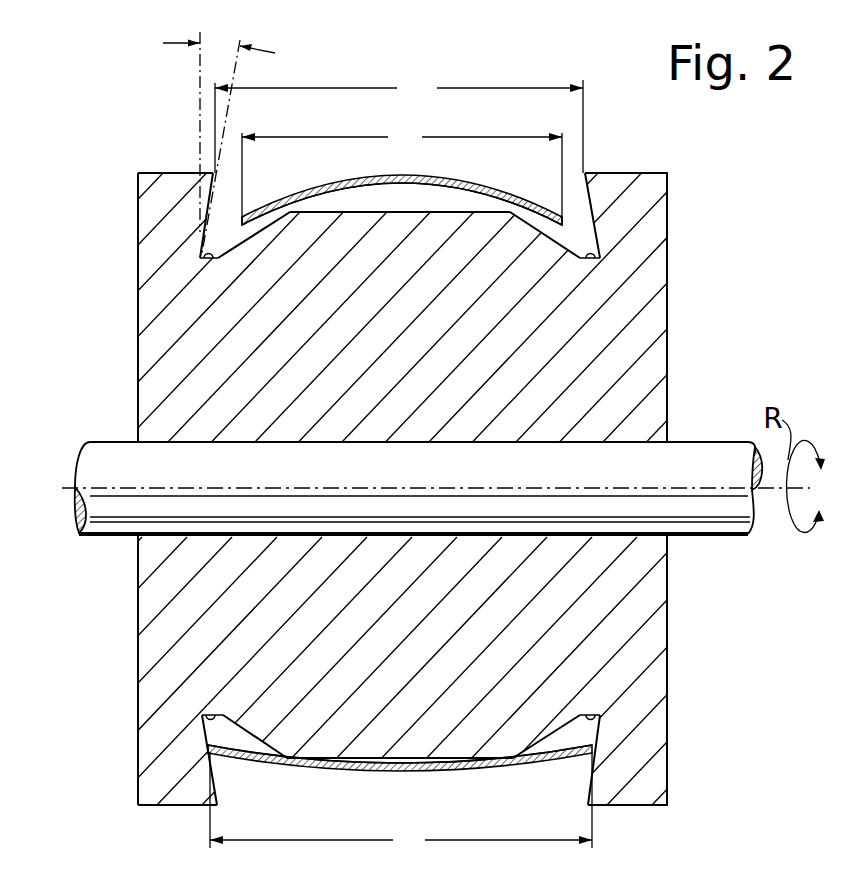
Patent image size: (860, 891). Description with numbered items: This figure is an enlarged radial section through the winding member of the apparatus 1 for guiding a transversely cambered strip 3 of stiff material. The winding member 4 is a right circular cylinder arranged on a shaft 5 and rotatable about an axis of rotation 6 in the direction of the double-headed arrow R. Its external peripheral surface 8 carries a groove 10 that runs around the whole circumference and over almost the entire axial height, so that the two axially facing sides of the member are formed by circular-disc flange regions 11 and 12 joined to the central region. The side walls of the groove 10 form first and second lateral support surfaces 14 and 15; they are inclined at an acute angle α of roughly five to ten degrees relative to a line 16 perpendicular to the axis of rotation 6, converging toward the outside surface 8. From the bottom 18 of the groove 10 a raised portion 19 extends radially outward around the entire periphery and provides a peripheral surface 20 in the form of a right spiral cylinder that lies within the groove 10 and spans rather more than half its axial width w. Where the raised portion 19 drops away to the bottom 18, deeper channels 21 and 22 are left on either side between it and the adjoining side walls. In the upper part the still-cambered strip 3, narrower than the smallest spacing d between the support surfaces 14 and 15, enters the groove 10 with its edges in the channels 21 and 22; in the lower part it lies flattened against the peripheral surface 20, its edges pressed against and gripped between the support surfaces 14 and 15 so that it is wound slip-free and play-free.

The apparatus 1 is at (700, 306).
The strip 3 is at (508, 198).
The winding member 4 is at (162, 373).
The shaft 5 is at (117, 523).
The axis of rotation 6 is at (66, 493).
The external peripheral surface 8 is at (607, 172).
The groove 10 is at (265, 195).
The flange region 11 is at (652, 185).
The flange region 12 is at (160, 182).
The first lateral support surface 14 is at (584, 202).
The second lateral support surface 15 is at (213, 203).
The line 16 is at (198, 110).
The bottom of the groove 18 is at (212, 261).
The raised portion 19 is at (448, 228).
The peripheral surface 20 is at (335, 212).
The channel 21 is at (582, 240).
The channel 22 is at (218, 240).